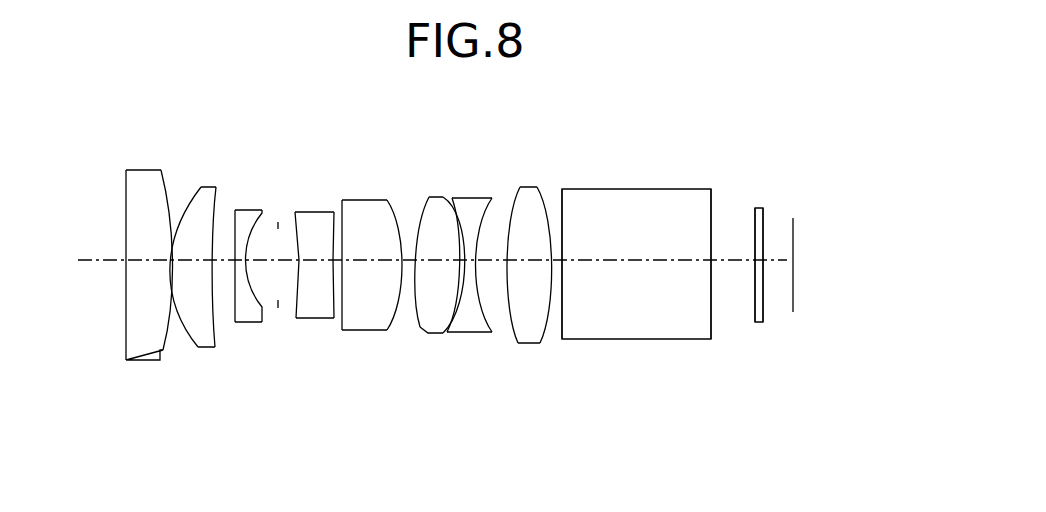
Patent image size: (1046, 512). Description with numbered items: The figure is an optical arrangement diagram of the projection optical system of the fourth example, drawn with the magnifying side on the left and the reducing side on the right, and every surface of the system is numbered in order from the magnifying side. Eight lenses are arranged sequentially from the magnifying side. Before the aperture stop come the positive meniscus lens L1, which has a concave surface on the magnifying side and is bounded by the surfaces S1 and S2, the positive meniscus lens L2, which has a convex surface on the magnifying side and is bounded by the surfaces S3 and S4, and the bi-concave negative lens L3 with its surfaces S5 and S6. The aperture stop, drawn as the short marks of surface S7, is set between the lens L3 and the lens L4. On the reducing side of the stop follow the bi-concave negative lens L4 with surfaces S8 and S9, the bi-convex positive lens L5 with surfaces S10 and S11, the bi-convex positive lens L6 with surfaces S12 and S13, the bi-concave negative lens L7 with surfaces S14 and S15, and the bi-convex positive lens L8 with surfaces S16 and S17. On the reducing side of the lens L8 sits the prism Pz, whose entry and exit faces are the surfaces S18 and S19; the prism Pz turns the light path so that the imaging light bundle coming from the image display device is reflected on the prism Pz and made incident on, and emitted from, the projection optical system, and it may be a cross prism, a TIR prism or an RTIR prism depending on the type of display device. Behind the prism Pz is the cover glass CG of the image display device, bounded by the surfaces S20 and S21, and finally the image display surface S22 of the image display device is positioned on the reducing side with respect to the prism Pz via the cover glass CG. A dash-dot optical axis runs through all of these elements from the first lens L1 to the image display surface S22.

The positive meniscus lens L1 is at (140, 192).
The positive meniscus lens L2 is at (203, 198).
The bi-concave negative lens L3 is at (252, 217).
The bi-concave negative lens L4 is at (317, 225).
The bi-convex positive lens L5 is at (356, 215).
The bi-convex positive lens L6 is at (436, 213).
The bi-concave negative lens L7 is at (470, 208).
The bi-convex positive lens L8 is at (533, 200).
The prism Pz is at (628, 205).
The cover glass CG is at (758, 213).
The first surface S1 is at (123, 347).
The second surface S2 is at (163, 360).
The third surface S3 is at (185, 332).
The fourth surface S4 is at (216, 348).
The fifth surface S5 is at (235, 323).
The sixth surface S6 is at (263, 323).
The aperture stop surface S7 is at (277, 248).
The eighth surface S8 is at (296, 300).
The ninth surface S9 is at (336, 320).
The tenth surface S10 is at (341, 332).
The eleventh surface S11 is at (389, 334).
The twelfth surface S12 is at (421, 334).
The thirteenth surface S13 is at (444, 334).
The fourteenth surface S14 is at (448, 334).
The fifteenth surface S15 is at (493, 333).
The sixteenth surface S16 is at (514, 345).
The seventeenth surface S17 is at (541, 340).
The eighteenth surface S18 is at (561, 341).
The nineteenth surface S19 is at (711, 330).
The twentieth surface S20 is at (754, 314).
The twenty-first surface S21 is at (765, 318).
The image display surface S22 is at (791, 318).